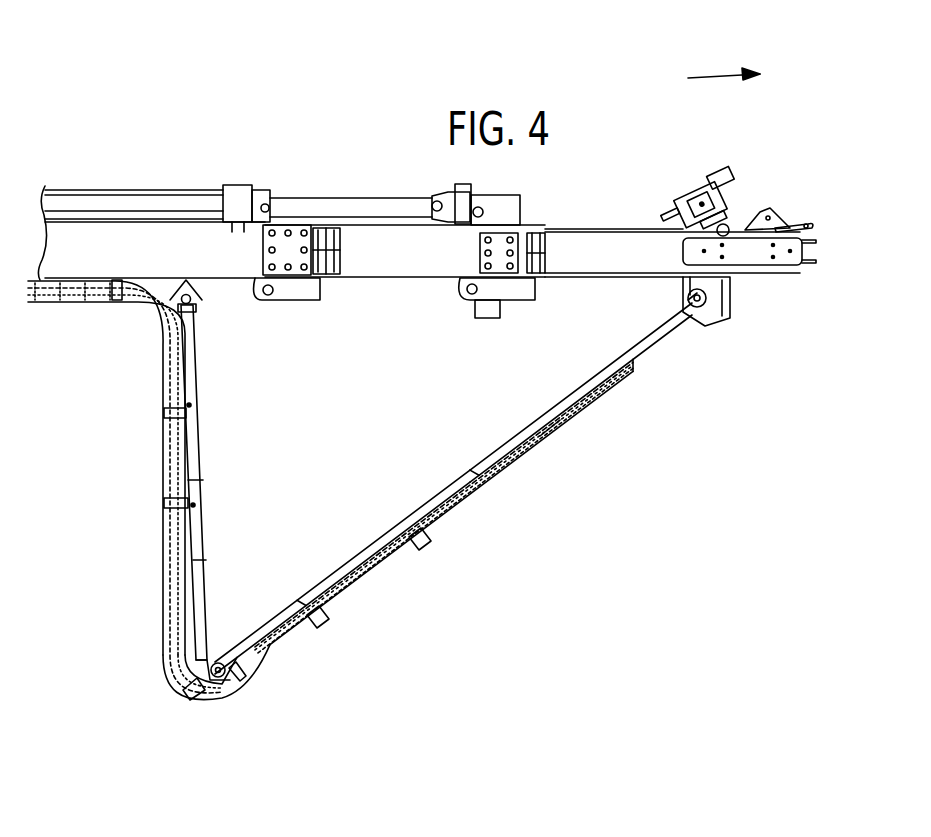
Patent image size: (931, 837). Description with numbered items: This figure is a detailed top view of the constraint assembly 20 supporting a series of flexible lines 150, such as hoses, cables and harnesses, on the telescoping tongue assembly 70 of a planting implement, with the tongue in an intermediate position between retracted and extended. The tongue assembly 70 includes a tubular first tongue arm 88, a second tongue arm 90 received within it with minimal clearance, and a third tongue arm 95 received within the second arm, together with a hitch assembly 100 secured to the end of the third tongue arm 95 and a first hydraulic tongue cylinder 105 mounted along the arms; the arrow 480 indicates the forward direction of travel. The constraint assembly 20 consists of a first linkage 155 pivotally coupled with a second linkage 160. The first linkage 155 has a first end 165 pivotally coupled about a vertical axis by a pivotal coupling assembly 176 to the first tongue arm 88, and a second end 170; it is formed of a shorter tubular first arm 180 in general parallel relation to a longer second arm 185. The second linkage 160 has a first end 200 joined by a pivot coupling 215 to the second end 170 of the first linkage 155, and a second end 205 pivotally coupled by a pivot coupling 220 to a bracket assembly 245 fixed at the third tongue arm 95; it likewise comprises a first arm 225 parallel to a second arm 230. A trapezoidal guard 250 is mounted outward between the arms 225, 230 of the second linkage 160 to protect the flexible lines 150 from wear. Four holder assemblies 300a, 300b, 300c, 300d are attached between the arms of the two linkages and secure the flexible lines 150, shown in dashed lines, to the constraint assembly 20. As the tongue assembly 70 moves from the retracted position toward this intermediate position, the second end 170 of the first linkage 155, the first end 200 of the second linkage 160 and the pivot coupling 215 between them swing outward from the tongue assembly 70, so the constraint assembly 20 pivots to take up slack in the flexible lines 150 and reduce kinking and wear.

The constraint assembly 20 is at (468, 580).
The telescoping tongue assembly 70 is at (347, 118).
The first tongue arm 88 is at (130, 222).
The second tongue arm 90 is at (385, 228).
The third tongue arm 95 is at (587, 232).
The hitch assembly 100 is at (818, 234).
The first hydraulic tongue cylinder 105 is at (110, 188).
The series of flexible lines 150 is at (93, 304).
The first linkage 155 is at (195, 445).
The second linkage 160 is at (440, 490).
The first end of the first linkage 165 is at (200, 311).
The second end of the first linkage 170 is at (203, 646).
The pivotal coupling assembly 176 is at (194, 299).
The first arm of the first linkage 180 is at (203, 490).
The second arm of the first linkage 185 is at (201, 568).
The first end of the second linkage 200 is at (241, 671).
The second end of the second linkage 205 is at (680, 328).
The pivot coupling 215 is at (197, 682).
The pivot coupling 220 is at (684, 294).
The first arm of the second linkage 225 is at (522, 423).
The second arm of the second linkage 230 is at (277, 613).
The bracket assembly 245 is at (736, 285).
The guard 250 is at (545, 433).
The holder assembly 300a is at (165, 414).
The holder assembly 300b is at (168, 505).
The holder assembly 300c is at (314, 610).
The holder assembly 300d is at (418, 536).
The arrow 480 is at (710, 73).